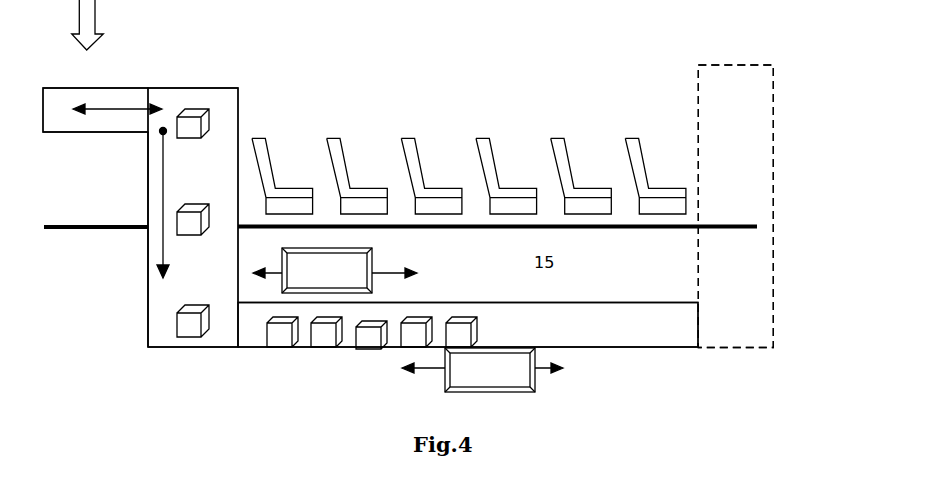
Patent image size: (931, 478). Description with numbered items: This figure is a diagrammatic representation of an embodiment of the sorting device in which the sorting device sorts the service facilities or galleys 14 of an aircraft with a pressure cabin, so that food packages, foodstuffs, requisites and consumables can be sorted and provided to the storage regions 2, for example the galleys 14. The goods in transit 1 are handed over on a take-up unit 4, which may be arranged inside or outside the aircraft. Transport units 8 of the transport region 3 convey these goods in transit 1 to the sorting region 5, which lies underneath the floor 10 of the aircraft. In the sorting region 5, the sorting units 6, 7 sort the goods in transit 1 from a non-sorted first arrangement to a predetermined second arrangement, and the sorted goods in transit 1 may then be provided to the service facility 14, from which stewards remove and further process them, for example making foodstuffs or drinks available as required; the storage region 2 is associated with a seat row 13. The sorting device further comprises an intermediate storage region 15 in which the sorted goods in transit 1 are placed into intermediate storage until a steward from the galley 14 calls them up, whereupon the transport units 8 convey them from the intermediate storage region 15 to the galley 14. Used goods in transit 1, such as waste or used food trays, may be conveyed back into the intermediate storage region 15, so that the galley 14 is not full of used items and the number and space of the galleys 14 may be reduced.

The goods in transit 1 is at (193, 123).
The storage region 2 is at (735, 206).
The transport region 3 is at (158, 217).
The take-up unit 4 is at (52, 111).
The sorting region 5 is at (439, 290).
The sorting unit 6 is at (335, 270).
The sorting unit 7 is at (482, 370).
The transport unit 8 is at (158, 217).
The floor 10 is at (757, 226).
The seat row 13 is at (627, 151).
The galley 14 is at (735, 206).
The intermediate storage region 15 is at (468, 266).